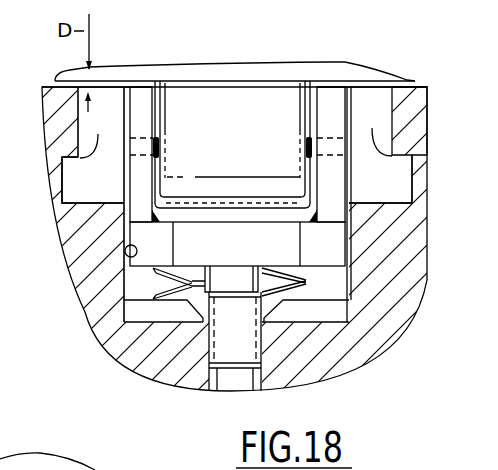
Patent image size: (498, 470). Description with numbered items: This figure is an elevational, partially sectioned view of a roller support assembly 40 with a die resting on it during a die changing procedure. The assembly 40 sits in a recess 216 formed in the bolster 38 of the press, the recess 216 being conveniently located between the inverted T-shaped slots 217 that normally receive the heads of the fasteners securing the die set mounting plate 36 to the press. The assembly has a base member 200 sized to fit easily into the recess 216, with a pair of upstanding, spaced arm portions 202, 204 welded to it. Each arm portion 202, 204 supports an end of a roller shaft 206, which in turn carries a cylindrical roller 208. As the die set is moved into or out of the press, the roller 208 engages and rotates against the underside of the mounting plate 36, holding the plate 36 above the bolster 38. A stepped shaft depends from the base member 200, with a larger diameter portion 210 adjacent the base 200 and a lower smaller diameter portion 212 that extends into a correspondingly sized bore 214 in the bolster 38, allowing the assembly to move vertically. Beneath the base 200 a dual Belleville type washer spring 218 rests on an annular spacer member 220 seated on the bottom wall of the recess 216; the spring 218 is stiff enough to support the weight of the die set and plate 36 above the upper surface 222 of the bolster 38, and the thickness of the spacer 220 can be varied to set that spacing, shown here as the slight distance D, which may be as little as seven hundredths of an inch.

The die set mounting plate 36 is at (104, 73).
The roller support assembly 40 is at (197, 76).
The bolster 38 is at (42, 88).
The upper surface of the bolster 222 is at (413, 88).
The T-shaped slots 217 is at (236, 133).
The arm portion 204 is at (130, 184).
The arm portion 202 is at (332, 95).
The roller shaft 206 is at (158, 146).
The base member 200 is at (198, 228).
The cylindrical roller 208 is at (272, 157).
The larger diameter portion 210 is at (253, 266).
The recess 216 is at (124, 251).
The Belleville type washer spring 218 is at (310, 278).
The annular spacer member 220 is at (350, 322).
The smaller diameter portion 212 is at (260, 348).
The bore 214 is at (209, 339).